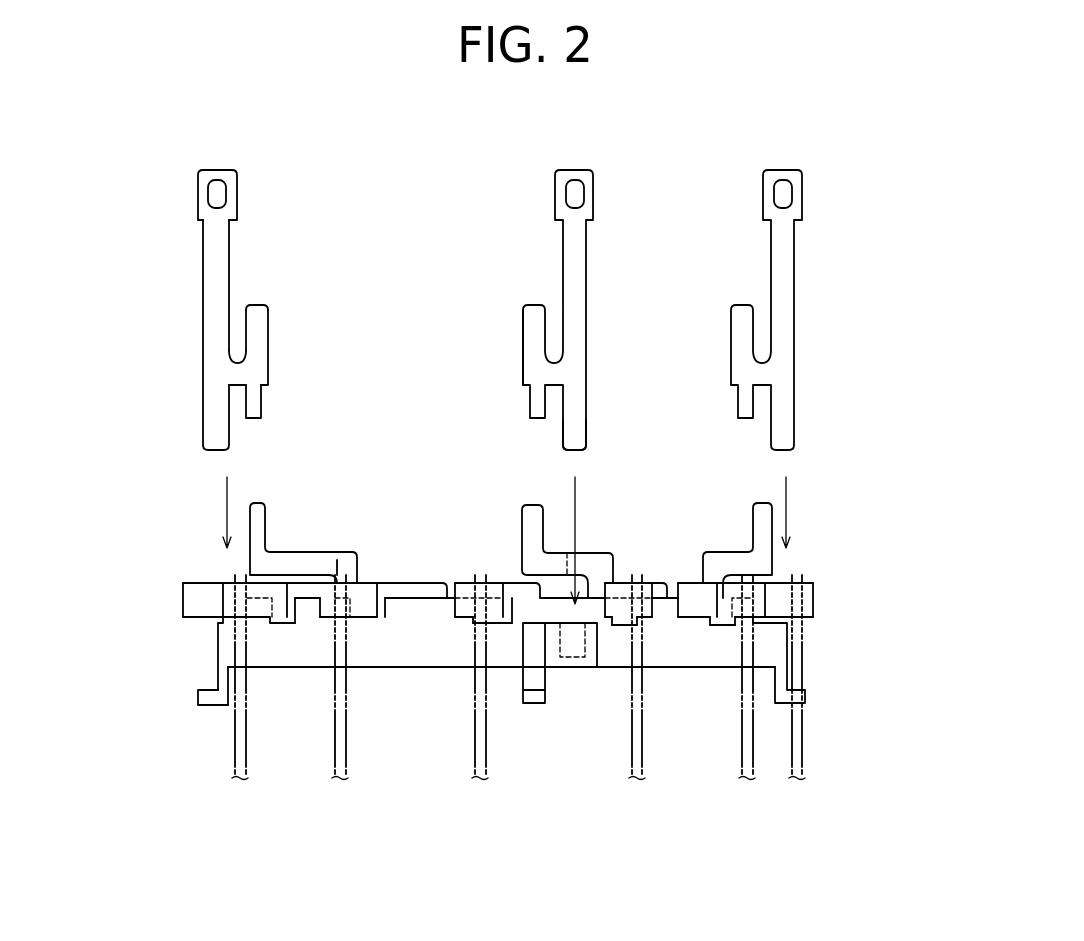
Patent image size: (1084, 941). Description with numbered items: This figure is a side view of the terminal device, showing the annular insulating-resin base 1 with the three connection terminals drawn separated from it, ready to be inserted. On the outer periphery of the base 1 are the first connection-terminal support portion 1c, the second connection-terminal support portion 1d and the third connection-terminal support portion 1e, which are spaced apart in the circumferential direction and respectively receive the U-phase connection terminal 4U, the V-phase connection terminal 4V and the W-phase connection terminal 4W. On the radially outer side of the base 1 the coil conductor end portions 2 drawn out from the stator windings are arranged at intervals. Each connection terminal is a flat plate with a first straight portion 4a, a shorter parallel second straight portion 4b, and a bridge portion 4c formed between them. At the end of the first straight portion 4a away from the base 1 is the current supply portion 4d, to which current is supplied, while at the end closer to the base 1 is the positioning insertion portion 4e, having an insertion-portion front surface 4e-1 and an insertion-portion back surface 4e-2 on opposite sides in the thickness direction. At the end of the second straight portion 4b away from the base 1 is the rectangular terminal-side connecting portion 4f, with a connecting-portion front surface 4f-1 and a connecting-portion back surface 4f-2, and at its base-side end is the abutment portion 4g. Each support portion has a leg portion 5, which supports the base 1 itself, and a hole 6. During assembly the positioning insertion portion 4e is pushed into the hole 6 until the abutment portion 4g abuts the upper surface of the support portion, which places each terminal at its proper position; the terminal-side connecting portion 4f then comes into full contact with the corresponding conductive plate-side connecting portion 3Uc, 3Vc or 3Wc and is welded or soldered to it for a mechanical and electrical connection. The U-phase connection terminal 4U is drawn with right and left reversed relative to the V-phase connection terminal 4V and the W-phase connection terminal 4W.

The base 1 is at (413, 607).
The first connection-terminal support portion 1c is at (218, 642).
The second connection-terminal support portion 1d is at (787, 657).
The third connection-terminal support portion 1e is at (597, 648).
The coil conductor end portions 2 is at (802, 723).
The U-phase conductive plate-side connecting portion 3Uc is at (258, 520).
The W-phase conductive plate-side connecting portion 3Wc is at (533, 507).
The V-phase conductive plate-side connecting portion 3Vc is at (773, 567).
The U-phase connection terminal 4U is at (228, 248).
The W-phase connection terminal 4W is at (587, 277).
The V-phase connection terminal 4V is at (794, 280).
The first straight portion 4a is at (210, 312).
The second straight portion 4b is at (270, 355).
The bridge portion 4c is at (233, 351).
The current supply portion 4d is at (197, 193).
The positioning insertion portion 4e is at (212, 443).
The insertion-portion front surface 4e-1 is at (578, 430).
The insertion-portion back surface 4e-2 is at (213, 430).
The terminal-side connecting portion 4f is at (267, 328).
The connecting-portion front surface 4f-1 is at (532, 338).
The connecting-portion back surface 4f-2 is at (253, 307).
The abutment portion 4g is at (263, 413).
The leg portion 5 is at (198, 690).
The hole 6 is at (567, 657).